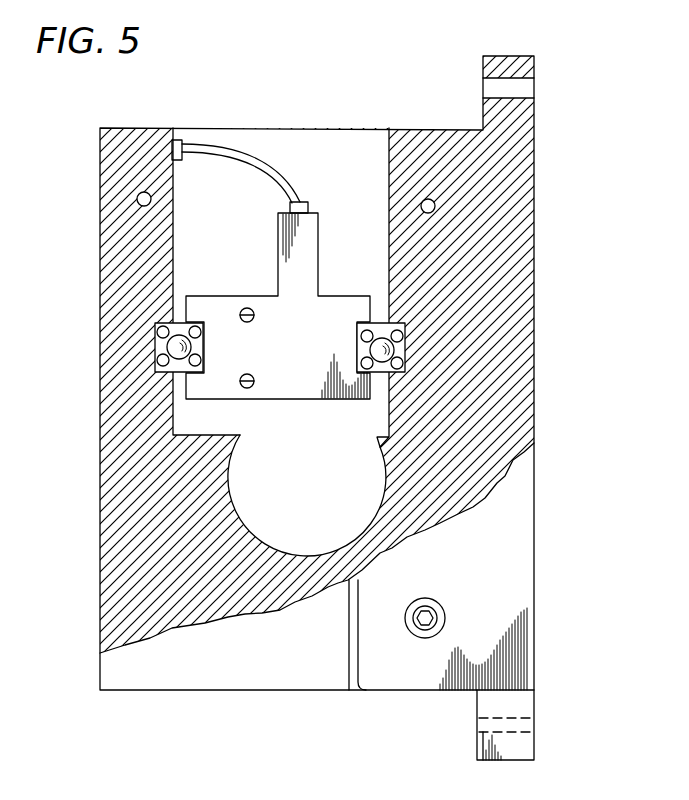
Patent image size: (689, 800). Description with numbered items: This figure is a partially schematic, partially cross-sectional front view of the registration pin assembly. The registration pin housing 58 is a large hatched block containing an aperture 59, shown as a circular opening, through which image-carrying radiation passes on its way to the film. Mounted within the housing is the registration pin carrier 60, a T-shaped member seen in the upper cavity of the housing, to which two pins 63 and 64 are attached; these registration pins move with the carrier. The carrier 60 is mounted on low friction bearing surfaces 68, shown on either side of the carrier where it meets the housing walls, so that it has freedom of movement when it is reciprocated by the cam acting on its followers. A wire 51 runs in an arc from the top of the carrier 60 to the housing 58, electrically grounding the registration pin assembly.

The registration pin housing 58 is at (526, 155).
The aperture 59 is at (328, 525).
The registration pin carrier 60 is at (210, 303).
The wire 51 is at (297, 189).
The pin 63 is at (255, 317).
The pin 64 is at (255, 381).
The low friction bearing surfaces 68 is at (198, 342).